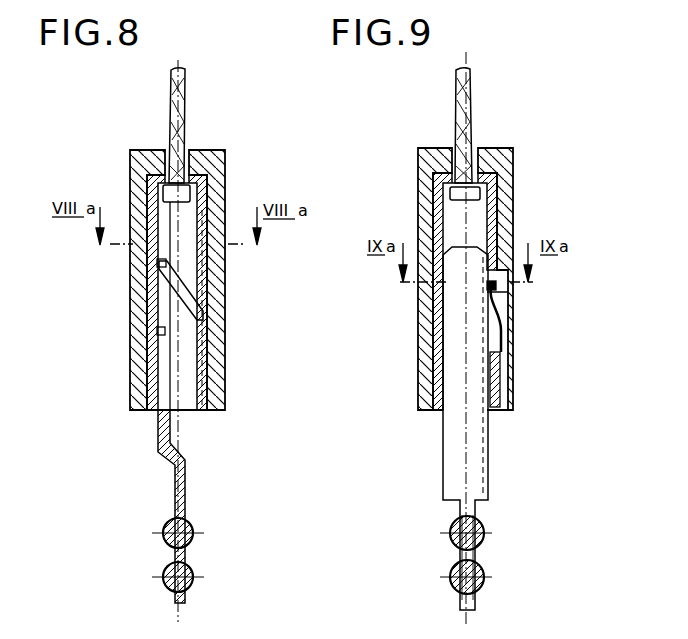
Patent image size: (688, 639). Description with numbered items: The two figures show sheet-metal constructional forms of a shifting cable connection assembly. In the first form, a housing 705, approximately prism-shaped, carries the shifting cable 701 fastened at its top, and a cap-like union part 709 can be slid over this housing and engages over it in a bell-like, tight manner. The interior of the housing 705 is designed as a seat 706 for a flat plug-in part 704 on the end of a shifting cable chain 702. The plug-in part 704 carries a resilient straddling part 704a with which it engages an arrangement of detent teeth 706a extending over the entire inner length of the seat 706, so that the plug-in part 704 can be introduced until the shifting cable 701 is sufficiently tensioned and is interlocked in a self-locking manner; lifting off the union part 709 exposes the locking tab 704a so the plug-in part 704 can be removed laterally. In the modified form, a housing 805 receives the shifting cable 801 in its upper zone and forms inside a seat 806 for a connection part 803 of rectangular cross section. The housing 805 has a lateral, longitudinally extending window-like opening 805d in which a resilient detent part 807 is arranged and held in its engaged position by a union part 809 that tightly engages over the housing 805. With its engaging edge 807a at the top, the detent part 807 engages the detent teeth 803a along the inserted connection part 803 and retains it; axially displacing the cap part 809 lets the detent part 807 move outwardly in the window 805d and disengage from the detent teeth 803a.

In FIG. 8, the shifting cable 701 is at (186, 84).
In FIG. 8, the cap-like union part 709 is at (205, 158).
In FIG. 8, the housing 705 is at (196, 184).
In FIG. 8, the seat 706 is at (172, 225).
In FIG. 8, the plug-in part 704 is at (163, 428).
In FIG. 8, the resilient straddling part 704a is at (188, 303).
In FIG. 8, the detent teeth 706a is at (199, 330).
In FIG. 8, the shifting cable chain 702 is at (187, 553).
In FIG. 9, the shifting cable 801 is at (458, 95).
In FIG. 9, the union part 809 is at (450, 160).
In FIG. 9, the housing 805 is at (492, 202).
In FIG. 9, the seat 806 is at (472, 225).
In FIG. 9, the window-like opening 805d is at (488, 288).
In FIG. 9, the engaging edge 807a is at (493, 298).
In FIG. 9, the detent part 807 is at (492, 348).
In FIG. 9, the detent teeth 803a is at (486, 430).
In FIG. 9, the connection part 803 is at (470, 460).